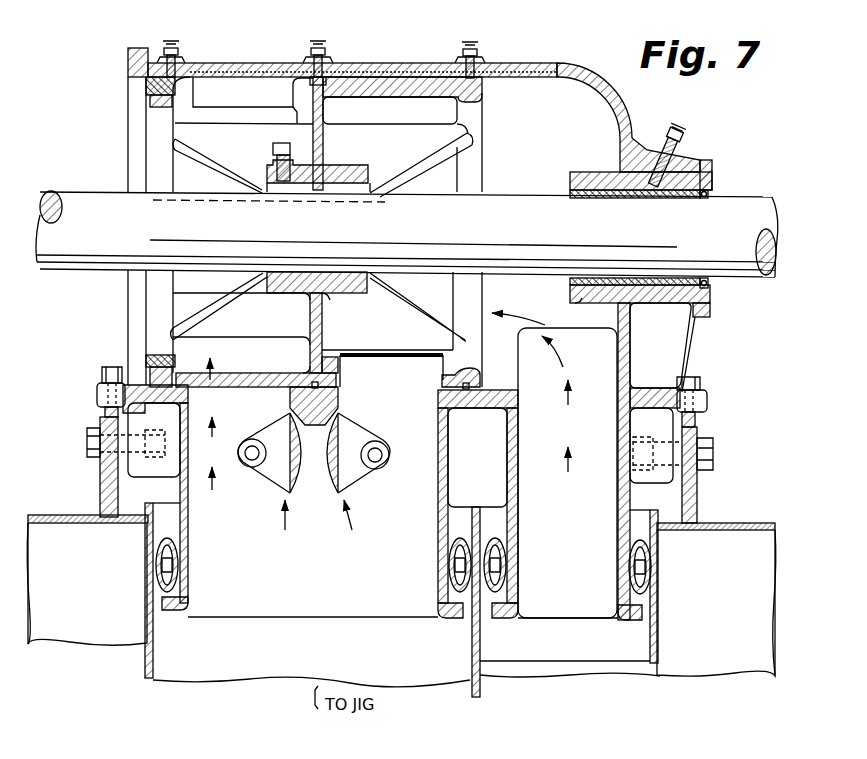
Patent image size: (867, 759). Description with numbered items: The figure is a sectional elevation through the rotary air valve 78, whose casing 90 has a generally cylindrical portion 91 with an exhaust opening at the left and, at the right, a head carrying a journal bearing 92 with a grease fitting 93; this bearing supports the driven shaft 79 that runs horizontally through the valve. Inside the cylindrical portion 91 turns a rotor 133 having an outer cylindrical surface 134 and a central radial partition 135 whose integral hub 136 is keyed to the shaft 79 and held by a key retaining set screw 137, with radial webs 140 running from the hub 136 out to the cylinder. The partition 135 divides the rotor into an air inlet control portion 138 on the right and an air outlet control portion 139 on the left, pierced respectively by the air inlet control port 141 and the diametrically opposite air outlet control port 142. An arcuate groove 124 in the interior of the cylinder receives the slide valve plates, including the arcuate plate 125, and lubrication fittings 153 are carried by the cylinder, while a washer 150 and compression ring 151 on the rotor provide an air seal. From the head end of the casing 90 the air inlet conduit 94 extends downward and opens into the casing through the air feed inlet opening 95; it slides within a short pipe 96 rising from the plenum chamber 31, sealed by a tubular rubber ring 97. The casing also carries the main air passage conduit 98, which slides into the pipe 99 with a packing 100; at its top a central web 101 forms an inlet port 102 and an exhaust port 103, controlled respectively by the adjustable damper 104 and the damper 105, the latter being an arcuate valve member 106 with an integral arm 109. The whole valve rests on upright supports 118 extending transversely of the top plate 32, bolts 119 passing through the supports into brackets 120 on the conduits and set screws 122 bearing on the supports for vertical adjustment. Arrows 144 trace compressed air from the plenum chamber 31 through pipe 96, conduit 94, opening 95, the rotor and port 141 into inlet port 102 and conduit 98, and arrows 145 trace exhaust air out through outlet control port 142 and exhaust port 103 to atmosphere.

The plenum chamber 31 is at (401, 599).
The top plate 32 is at (56, 515).
The rotary air valve 78 is at (116, 96).
The driven shaft 79 is at (745, 218).
The casing 90 is at (558, 63).
The cylindrical portion 91 is at (377, 63).
The journal bearing 92 is at (713, 166).
The grease fitting 93 is at (681, 136).
The air inlet conduit 94 is at (634, 612).
The air feed inlet opening 95 is at (548, 328).
The pipe 96 is at (659, 648).
The tubular rubber ring 97 is at (506, 546).
The main air passage conduit 98 is at (441, 538).
The pipe 99 is at (481, 690).
The packing 100 is at (185, 531).
The central web 101 is at (323, 385).
The inlet port 102 is at (418, 397).
The exhaust port 103 is at (232, 397).
The adjustable damper 104 is at (352, 526).
The damper 105 is at (283, 528).
The arcuate valve member 106 is at (298, 446).
The arm 109 is at (272, 466).
The upright supports 118 is at (106, 478).
The bolts 119 is at (87, 441).
The brackets 120 is at (97, 395).
The set screws 122 is at (103, 372).
The arcuate groove 124 is at (438, 70).
The arcuate plate 125 is at (418, 62).
The rotor 133 is at (357, 148).
The outer cylindrical surface 134 is at (385, 86).
The partition 135 is at (325, 114).
The hub 136 is at (367, 168).
The key retaining set screw 137 is at (273, 149).
The air inlet control portion 138 is at (442, 188).
The air outlet control portion 139 is at (192, 172).
The radial webs 140 is at (222, 166).
The air inlet control port 141 is at (368, 372).
The air outlet control port 142 is at (252, 90).
The arrows 144 is at (557, 350).
The arrows 145 is at (200, 338).
The washer 150 is at (148, 103).
The compression ring 151 is at (126, 77).
The lubrication fittings 153 is at (176, 48).